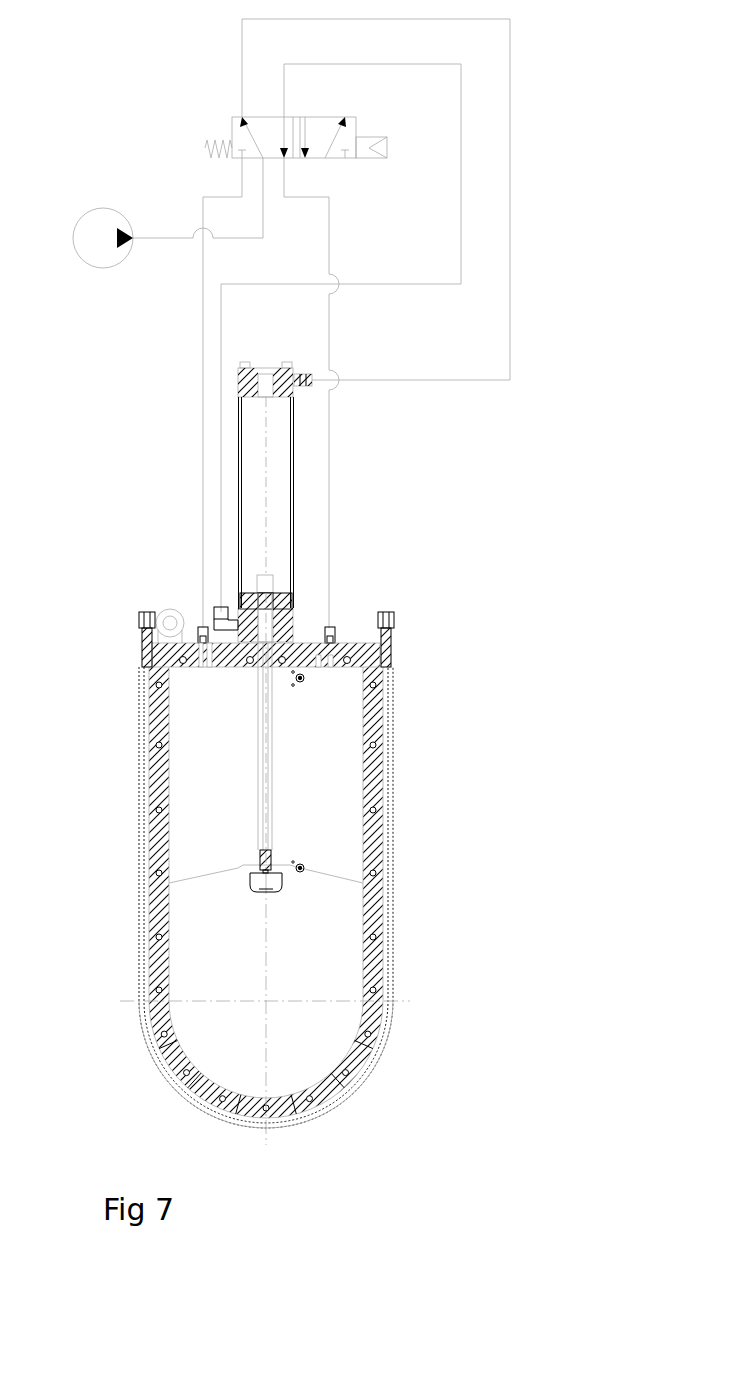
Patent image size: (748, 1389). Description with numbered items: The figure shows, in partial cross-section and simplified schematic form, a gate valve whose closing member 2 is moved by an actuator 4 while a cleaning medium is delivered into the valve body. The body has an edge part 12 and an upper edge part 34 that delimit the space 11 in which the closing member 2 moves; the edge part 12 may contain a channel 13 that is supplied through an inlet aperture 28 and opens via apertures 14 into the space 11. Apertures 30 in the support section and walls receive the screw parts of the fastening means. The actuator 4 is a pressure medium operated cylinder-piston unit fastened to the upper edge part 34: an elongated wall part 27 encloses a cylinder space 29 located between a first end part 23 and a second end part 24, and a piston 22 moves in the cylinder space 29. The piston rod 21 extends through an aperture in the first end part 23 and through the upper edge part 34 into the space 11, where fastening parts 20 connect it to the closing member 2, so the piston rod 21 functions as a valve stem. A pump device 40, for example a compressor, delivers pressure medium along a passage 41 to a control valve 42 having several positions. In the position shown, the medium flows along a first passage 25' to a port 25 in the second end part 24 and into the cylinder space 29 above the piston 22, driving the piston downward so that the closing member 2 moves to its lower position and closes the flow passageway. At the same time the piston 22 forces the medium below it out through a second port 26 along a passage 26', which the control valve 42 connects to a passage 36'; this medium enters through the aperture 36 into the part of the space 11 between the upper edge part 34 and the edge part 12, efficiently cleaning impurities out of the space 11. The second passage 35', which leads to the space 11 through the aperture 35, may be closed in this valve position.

The closing member 2 is at (328, 978).
The actuator 4 is at (312, 456).
The space 11 is at (192, 780).
The edge part 12 is at (393, 1030).
The channel 13 is at (307, 1112).
The apertures 14 is at (345, 1078).
The fastening parts 20 is at (267, 866).
The piston rod 21 is at (262, 762).
The piston 22 is at (292, 593).
The first end part 23 is at (292, 620).
The second end part 24 is at (246, 380).
The port 25 is at (349, 353).
The first passage 25' is at (426, 199).
The second port 26 is at (182, 563).
The passage 26' is at (341, 338).
The wall part 27 is at (293, 530).
The inlet aperture 28 is at (140, 623).
The cylinder space 29 is at (277, 510).
The apertures 30 is at (160, 936).
The upper edge part 34 is at (355, 655).
The aperture 35 is at (154, 584).
The second passage 35' is at (173, 393).
The aperture 36 is at (373, 613).
The passage 36' is at (351, 393).
The pump device 40 is at (87, 252).
The passage 41 is at (185, 237).
The control valve 42 is at (230, 132).